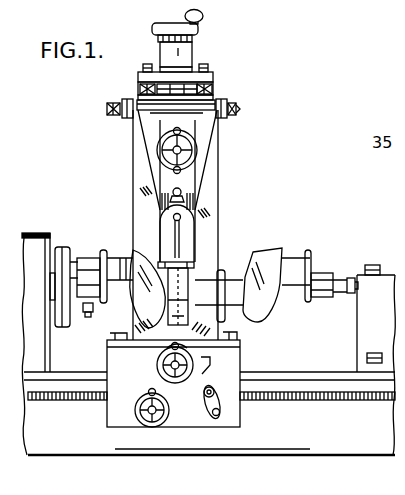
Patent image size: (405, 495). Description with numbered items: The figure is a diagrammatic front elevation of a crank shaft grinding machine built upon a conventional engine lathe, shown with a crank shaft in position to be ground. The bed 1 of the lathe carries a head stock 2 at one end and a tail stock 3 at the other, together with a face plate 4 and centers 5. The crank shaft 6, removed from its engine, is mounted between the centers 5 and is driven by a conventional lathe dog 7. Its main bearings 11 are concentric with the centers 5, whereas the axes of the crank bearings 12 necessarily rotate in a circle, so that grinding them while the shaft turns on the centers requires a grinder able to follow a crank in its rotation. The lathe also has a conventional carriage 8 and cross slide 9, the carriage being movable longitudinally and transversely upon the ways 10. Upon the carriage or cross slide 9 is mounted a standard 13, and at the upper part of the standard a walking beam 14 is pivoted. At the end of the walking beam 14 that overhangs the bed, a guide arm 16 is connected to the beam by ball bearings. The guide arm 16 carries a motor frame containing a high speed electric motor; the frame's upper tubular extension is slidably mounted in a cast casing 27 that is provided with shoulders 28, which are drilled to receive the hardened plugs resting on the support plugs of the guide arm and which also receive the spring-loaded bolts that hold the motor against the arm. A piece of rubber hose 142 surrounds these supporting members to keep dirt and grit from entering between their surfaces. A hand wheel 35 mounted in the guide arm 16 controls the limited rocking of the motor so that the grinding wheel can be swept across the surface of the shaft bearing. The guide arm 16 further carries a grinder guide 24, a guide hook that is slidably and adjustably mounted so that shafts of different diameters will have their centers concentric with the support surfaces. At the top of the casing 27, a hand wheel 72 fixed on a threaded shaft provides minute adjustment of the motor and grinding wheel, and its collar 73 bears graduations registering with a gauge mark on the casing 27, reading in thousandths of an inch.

The bed 1 is at (93, 452).
The head stock 2 is at (32, 232).
The tail stock 3 is at (360, 331).
The face plate 4 is at (62, 248).
The centers 5 is at (353, 275).
The crank shaft 6 is at (265, 260).
The lathe dog 7 is at (86, 262).
The carriage 8 is at (186, 415).
The cross slide 9 is at (243, 352).
The ways 10 is at (329, 375).
The main bearings 11 is at (322, 271).
The crank bearings 12 is at (292, 250).
The standard 13 is at (212, 198).
The walking beam 14 is at (238, 110).
The guide arm 16 is at (190, 228).
The grinder guide 24 is at (165, 342).
The casing 27 is at (193, 52).
The shoulders 28 is at (143, 78).
The hand wheel 35 is at (197, 152).
The hand wheel 72 is at (203, 18).
The collar 73 is at (199, 37).
The rubber hose 142 is at (140, 86).